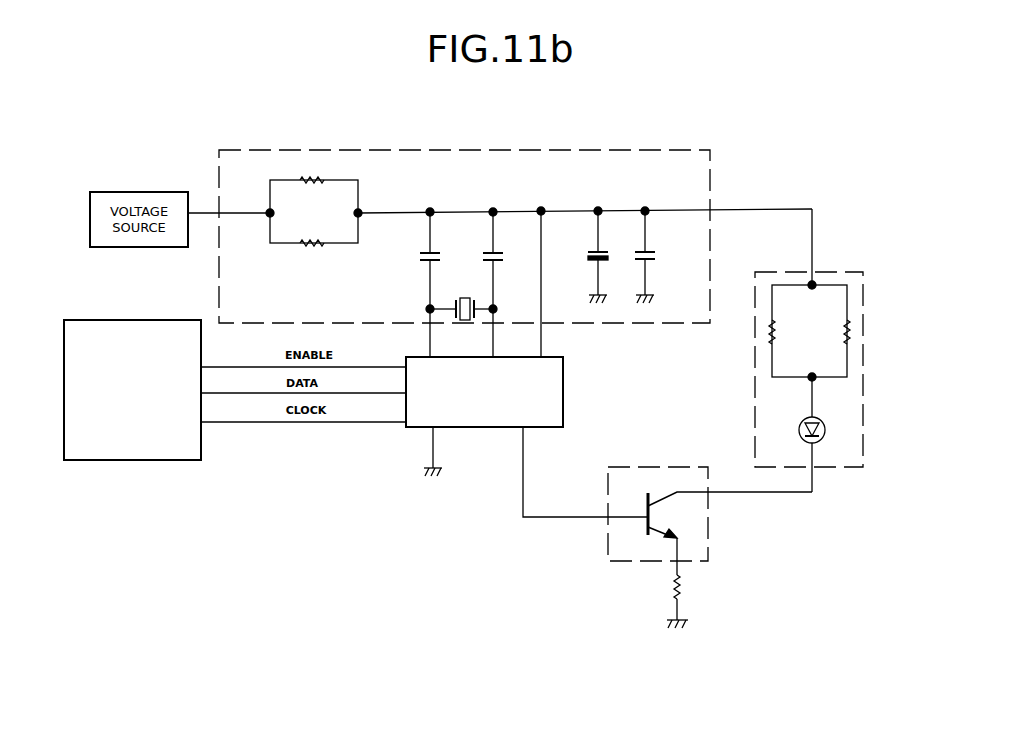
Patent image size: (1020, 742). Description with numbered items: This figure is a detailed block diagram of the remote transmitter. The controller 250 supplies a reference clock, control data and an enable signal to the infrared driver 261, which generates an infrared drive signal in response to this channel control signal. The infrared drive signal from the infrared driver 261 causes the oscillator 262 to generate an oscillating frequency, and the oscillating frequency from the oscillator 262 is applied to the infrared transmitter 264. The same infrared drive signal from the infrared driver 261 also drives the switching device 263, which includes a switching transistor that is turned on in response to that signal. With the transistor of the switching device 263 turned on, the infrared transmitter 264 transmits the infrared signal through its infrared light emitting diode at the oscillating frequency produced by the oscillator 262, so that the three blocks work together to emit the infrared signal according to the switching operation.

The controller 250 is at (128, 448).
The infrared driver 261 is at (487, 430).
The oscillator 262 is at (611, 150).
The switching device 263 is at (712, 527).
The infrared transmitter 264 is at (844, 268).